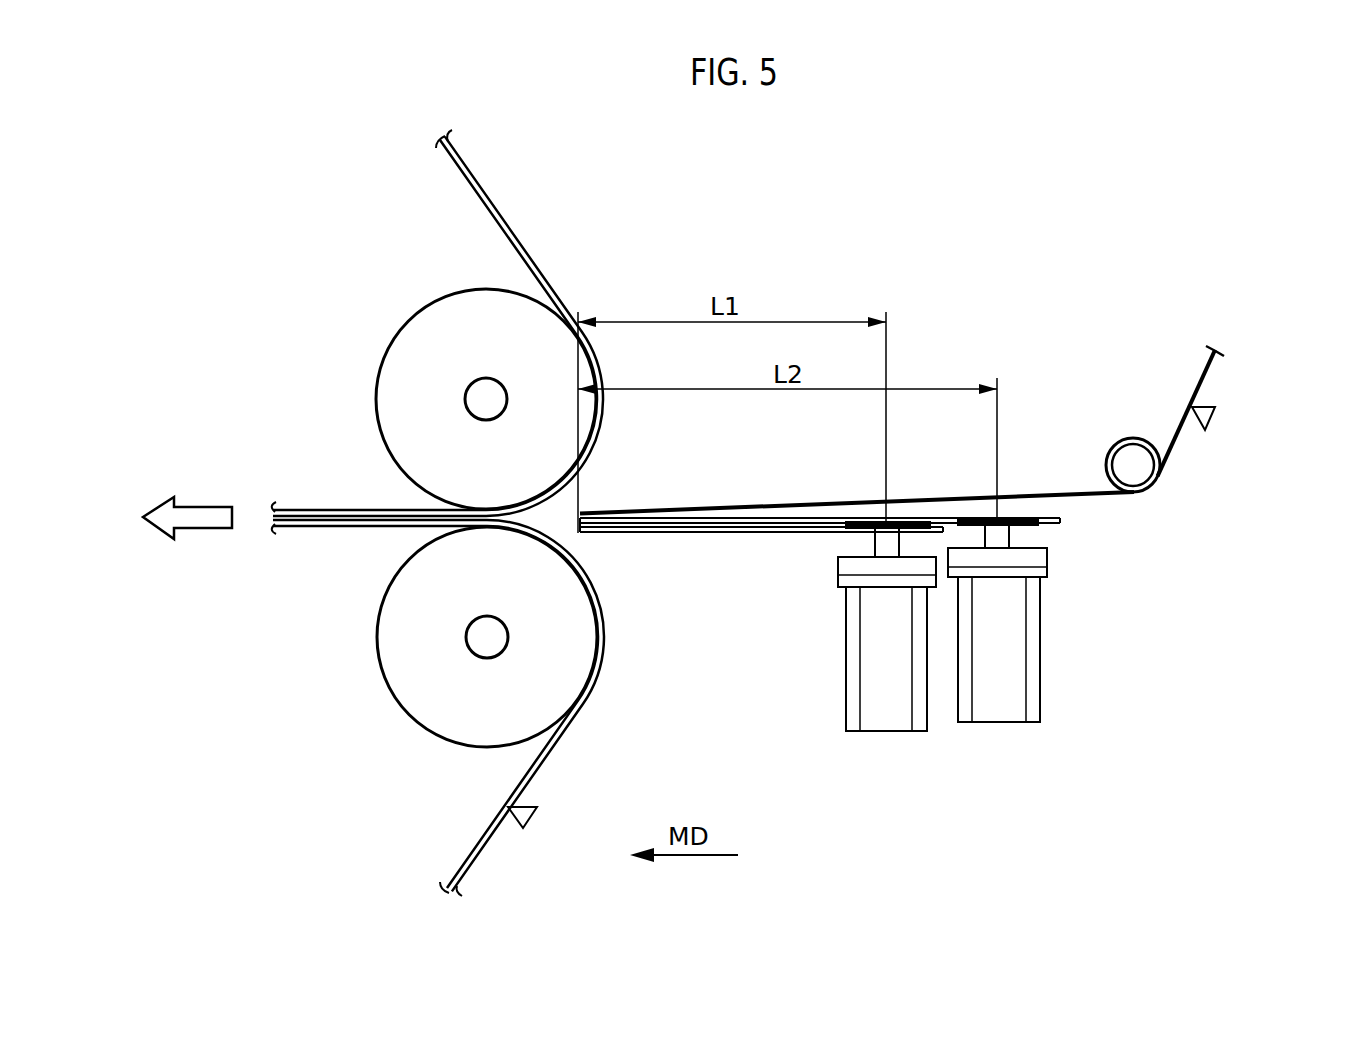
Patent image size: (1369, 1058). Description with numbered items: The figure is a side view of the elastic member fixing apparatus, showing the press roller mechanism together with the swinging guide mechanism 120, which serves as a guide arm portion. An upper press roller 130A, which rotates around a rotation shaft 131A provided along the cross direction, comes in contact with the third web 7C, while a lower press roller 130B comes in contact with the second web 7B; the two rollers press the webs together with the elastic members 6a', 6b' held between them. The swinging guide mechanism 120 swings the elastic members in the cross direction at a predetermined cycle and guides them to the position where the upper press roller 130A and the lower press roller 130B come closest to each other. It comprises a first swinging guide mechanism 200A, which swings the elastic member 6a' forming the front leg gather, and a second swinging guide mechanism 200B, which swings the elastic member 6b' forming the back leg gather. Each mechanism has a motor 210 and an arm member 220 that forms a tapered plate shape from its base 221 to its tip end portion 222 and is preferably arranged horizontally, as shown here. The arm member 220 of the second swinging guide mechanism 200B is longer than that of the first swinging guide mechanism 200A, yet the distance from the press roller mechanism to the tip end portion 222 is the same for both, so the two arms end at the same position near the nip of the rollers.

The third web 7C is at (522, 249).
The second web 7B is at (540, 765).
The upper press roller 130A is at (396, 362).
The lower press roller 130B is at (403, 680).
The rotation shaft 131A is at (478, 402).
The arm member 220 is at (723, 516).
The base 221 is at (860, 518).
The tip end portion 222 is at (583, 530).
The motor 210 is at (876, 657).
The first swinging guide mechanism 200A is at (943, 622).
The second swinging guide mechanism 200B is at (998, 722).
The swinging guide mechanism 120 is at (1033, 798).
The elastic member 6a' is at (1245, 411).
The elastic member 6b' is at (1245, 411).